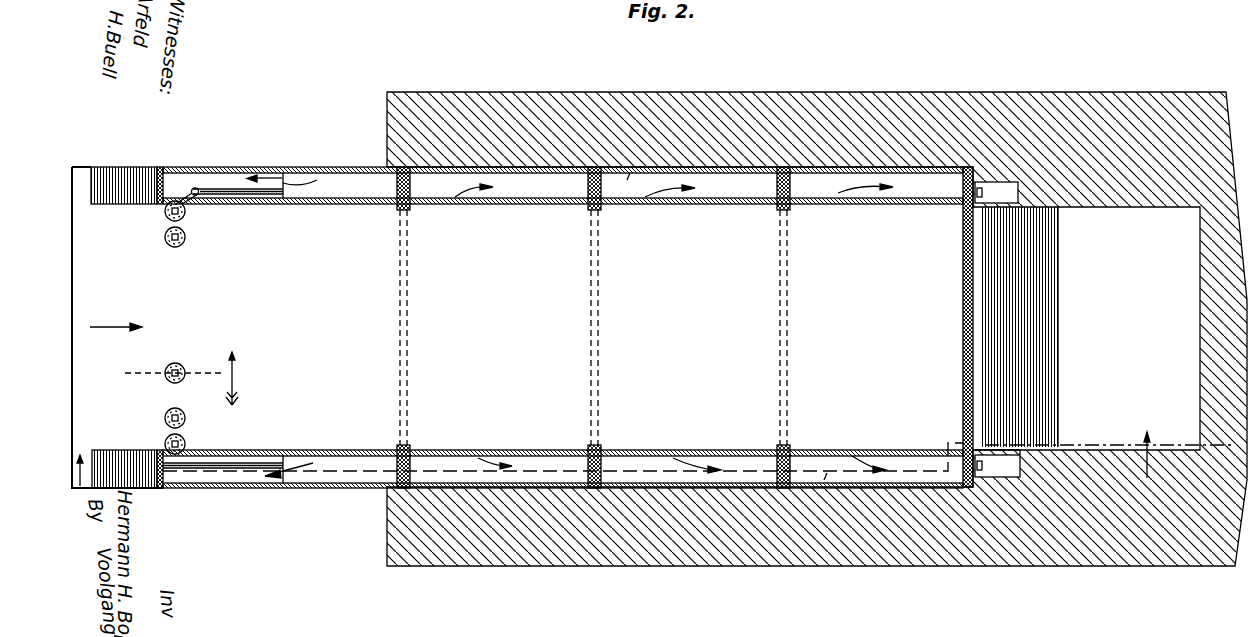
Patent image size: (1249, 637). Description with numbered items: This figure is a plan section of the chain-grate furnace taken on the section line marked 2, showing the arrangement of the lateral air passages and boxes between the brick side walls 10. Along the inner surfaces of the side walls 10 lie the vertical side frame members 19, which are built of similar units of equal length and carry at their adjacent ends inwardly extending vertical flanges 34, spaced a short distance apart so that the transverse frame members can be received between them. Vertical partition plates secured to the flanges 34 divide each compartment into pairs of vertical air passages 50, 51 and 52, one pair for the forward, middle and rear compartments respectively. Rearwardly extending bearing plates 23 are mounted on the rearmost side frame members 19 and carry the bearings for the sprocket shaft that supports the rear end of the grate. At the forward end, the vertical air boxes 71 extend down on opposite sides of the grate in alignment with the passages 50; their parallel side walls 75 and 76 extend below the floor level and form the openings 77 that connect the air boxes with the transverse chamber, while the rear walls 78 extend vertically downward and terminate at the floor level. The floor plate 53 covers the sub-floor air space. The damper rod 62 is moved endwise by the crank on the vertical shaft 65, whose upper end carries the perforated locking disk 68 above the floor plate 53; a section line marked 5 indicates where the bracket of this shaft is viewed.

The side walls 10 is at (696, 97).
The floor plate 53 is at (82, 152).
The openings 77 is at (198, 184).
The vertical air boxes 71 is at (234, 180).
The side wall of air box 76 is at (326, 167).
The rear walls 78 is at (395, 180).
The side wall of air box 75 is at (337, 205).
The rod 62 is at (257, 195).
The vertical shaft 65 is at (165, 235).
The disk 68 is at (185, 237).
The vertical passages 50 is at (486, 328).
The vertical passages 51 is at (687, 328).
The vertical passages 52 is at (877, 324).
The side frame members 19 is at (725, 327).
The flanges 34 is at (598, 211).
The bearing plates 23 is at (1000, 208).
The section line 5 is at (238, 378).
The section line 2 is at (651, 459).